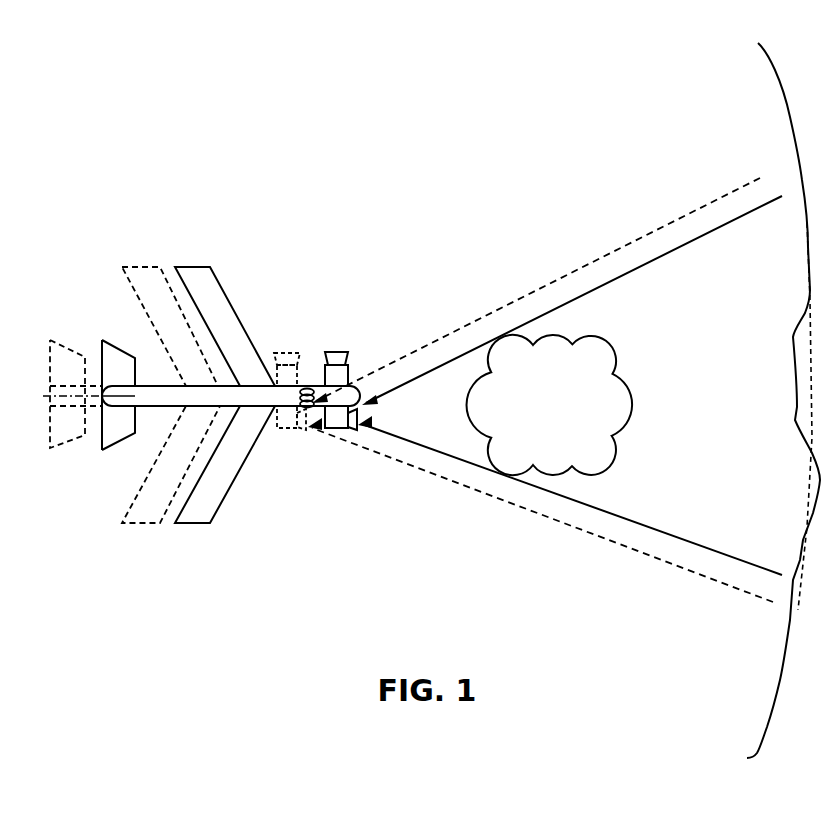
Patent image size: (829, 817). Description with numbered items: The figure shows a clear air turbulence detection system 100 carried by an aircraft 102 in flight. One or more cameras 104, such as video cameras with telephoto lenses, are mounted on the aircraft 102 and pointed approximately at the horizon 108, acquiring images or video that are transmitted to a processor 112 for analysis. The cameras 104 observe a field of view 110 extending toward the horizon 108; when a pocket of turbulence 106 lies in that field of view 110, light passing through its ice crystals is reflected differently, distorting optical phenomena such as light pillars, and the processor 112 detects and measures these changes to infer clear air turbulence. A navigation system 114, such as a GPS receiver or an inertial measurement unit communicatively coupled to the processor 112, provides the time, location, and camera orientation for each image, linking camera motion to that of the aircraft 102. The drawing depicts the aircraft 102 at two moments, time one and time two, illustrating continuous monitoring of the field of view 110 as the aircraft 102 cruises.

The clear air turbulence detection system 100 is at (285, 474).
The aircraft 102 is at (193, 523).
The camera 104 is at (338, 450).
The pocket of turbulence 106 is at (622, 350).
The horizon 108 is at (788, 117).
The field of view 110 is at (715, 395).
The processor 112 is at (306, 387).
The navigation system 114 is at (312, 405).